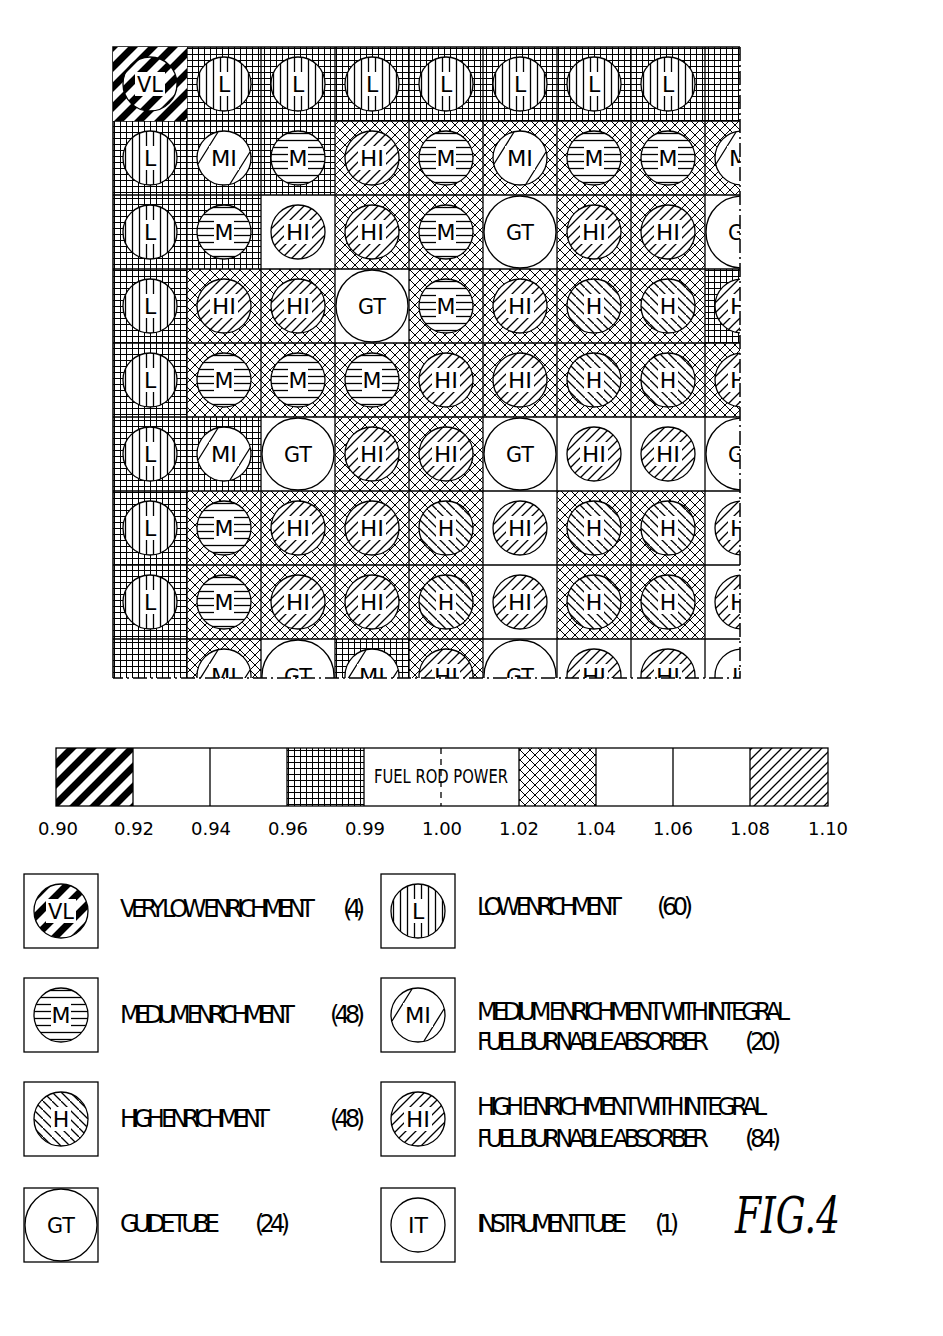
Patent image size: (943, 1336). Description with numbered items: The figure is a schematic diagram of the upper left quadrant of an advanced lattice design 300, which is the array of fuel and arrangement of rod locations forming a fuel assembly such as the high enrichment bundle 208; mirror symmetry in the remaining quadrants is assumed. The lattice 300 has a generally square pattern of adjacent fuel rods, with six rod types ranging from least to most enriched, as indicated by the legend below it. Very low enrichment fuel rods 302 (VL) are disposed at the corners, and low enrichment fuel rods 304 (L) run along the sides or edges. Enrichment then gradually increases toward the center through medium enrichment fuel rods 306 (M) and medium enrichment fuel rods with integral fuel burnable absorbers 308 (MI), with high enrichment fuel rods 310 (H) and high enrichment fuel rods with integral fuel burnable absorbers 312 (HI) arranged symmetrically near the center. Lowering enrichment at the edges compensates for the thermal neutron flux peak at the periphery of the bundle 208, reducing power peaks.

The high enrichment bundle 208 is at (779, 659).
The lattice 300 is at (823, 351).
The very low enrichment fuel rods 302 is at (115, 49).
The low enrichment fuel rods 304 is at (741, 68).
The medium enrichment fuel rods 306 is at (312, 146).
The medium enrichment fuel rods with integral fuel burnable absorbers 308 is at (456, 993).
The high enrichment fuel rods 310 is at (99, 1095).
The high enrichment fuel rods with integral fuel burnable absorbers 312 is at (456, 1148).